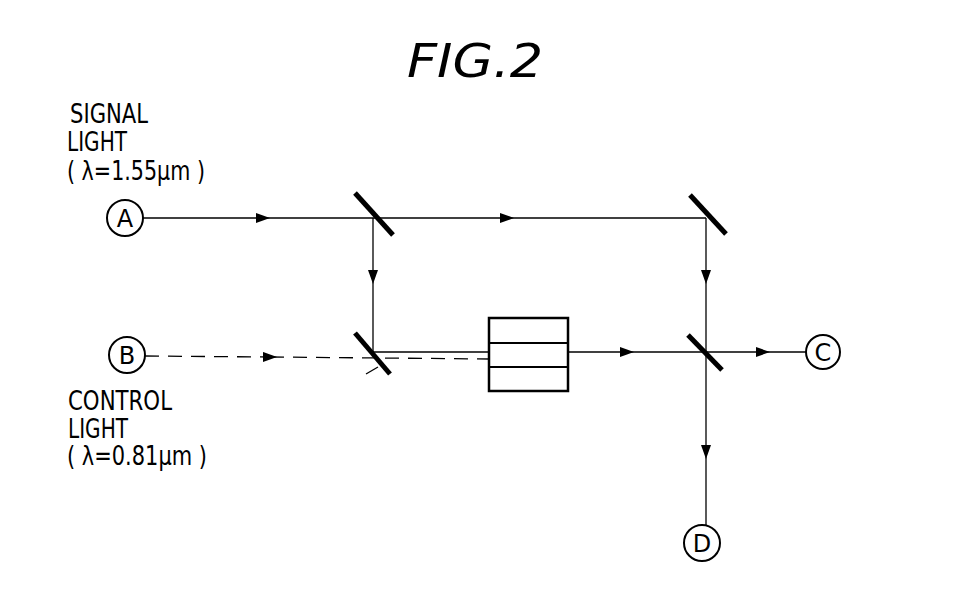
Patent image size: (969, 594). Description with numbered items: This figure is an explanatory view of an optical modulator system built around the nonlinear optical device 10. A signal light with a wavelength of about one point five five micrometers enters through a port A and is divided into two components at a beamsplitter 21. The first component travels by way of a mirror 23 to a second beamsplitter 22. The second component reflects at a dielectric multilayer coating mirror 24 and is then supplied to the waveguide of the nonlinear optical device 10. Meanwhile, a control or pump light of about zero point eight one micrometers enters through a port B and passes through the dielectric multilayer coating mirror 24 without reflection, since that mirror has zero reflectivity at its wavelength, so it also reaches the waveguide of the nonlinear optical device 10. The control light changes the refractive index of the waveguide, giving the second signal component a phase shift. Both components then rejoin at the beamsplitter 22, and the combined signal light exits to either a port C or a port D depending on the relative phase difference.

The nonlinear optical device 10 is at (512, 391).
The beamsplitter 21 is at (372, 211).
The beamsplitter 22 is at (717, 372).
The mirror 23 is at (704, 204).
The dielectric multilayer coating mirror 24 is at (316, 389).